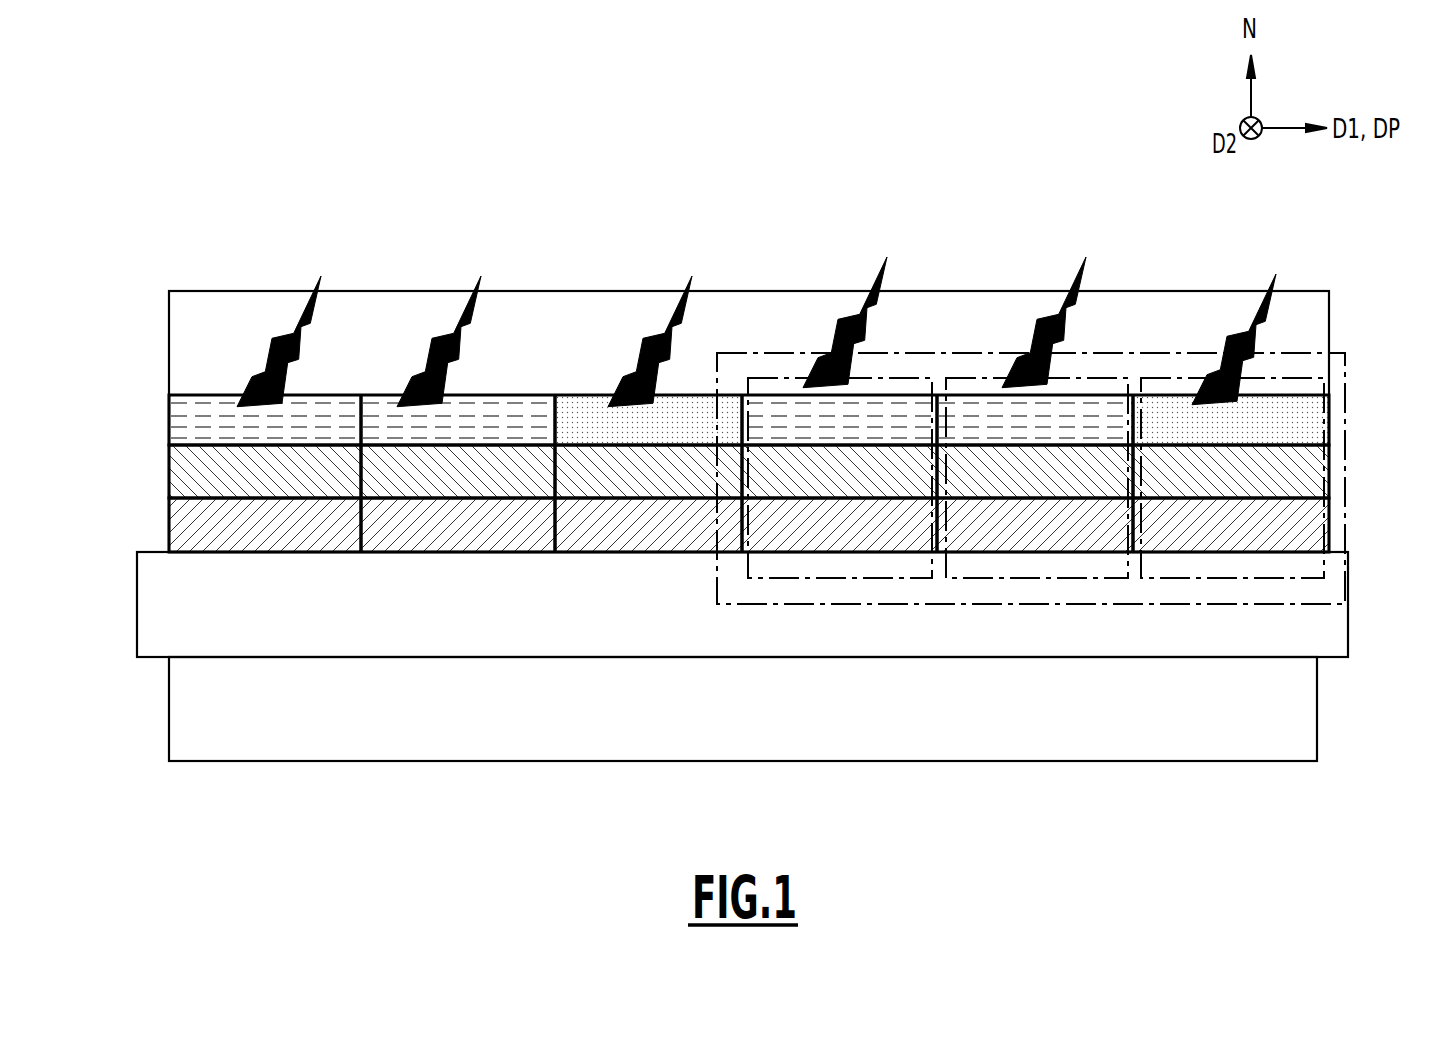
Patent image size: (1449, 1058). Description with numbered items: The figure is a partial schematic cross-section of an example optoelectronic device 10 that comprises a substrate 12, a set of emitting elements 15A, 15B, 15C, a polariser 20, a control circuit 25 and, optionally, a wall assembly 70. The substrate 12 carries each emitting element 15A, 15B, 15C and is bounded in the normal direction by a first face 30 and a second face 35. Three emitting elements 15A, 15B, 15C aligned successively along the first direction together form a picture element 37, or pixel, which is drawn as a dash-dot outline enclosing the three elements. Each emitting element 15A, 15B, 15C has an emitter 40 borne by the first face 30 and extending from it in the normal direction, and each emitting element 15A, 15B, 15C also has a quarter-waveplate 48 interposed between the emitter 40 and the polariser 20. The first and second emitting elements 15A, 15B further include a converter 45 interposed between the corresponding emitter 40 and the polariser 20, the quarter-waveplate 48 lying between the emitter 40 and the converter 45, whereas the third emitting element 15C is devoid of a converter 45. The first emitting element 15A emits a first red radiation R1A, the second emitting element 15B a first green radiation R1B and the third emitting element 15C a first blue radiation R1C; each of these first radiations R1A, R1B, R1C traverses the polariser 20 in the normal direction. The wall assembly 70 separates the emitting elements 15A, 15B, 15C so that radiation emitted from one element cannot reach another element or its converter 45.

The optoelectronic device 10 is at (236, 202).
The substrate 12 is at (1250, 637).
The first emitting element 15A is at (840, 578).
The second emitting element 15B is at (1042, 578).
The third emitting element 15C is at (1324, 467).
The polariser 20 is at (752, 313).
The control circuit 25 is at (295, 722).
The first face 30 is at (144, 541).
The second face 35 is at (144, 669).
The picture element 37 is at (1345, 432).
The emitter 40 is at (440, 532).
The converter 45 is at (490, 427).
The quarter-waveplate 48 is at (235, 472).
The wall assembly 70 is at (555, 478).
The first red radiation R1A is at (872, 315).
The first green radiation R1B is at (1070, 315).
The first blue radiation R1C is at (1258, 330).